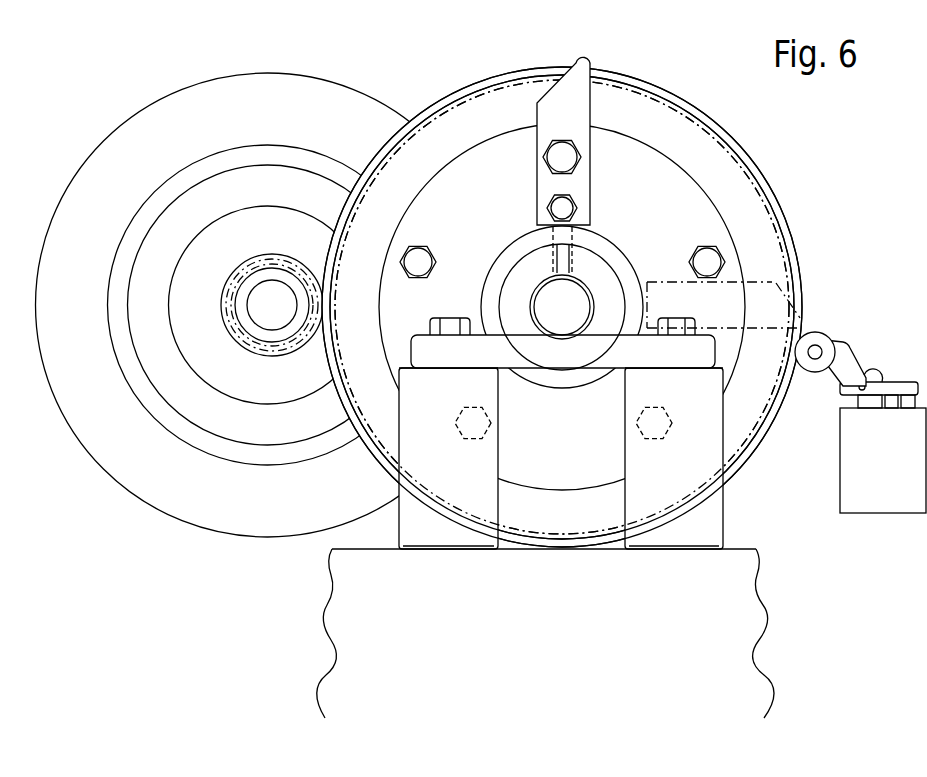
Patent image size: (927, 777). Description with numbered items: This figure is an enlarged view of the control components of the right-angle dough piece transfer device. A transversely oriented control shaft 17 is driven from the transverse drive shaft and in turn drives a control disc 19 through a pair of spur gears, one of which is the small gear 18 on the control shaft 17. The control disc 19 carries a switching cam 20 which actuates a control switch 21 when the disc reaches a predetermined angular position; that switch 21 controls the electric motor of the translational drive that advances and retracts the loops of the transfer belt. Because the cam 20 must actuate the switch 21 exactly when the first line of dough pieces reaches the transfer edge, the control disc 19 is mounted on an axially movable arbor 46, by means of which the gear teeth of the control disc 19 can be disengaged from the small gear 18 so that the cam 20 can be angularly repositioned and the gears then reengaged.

The control shaft 17 is at (262, 318).
The small gear 18 is at (229, 319).
The control disc 19 is at (791, 219).
The switching cam 20 is at (590, 61).
The control switch 21 is at (811, 327).
The axially movable arbor 46 is at (557, 325).